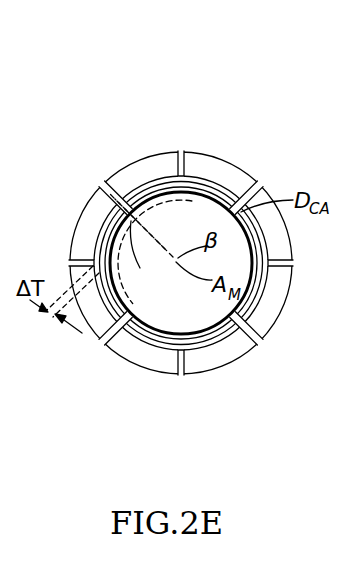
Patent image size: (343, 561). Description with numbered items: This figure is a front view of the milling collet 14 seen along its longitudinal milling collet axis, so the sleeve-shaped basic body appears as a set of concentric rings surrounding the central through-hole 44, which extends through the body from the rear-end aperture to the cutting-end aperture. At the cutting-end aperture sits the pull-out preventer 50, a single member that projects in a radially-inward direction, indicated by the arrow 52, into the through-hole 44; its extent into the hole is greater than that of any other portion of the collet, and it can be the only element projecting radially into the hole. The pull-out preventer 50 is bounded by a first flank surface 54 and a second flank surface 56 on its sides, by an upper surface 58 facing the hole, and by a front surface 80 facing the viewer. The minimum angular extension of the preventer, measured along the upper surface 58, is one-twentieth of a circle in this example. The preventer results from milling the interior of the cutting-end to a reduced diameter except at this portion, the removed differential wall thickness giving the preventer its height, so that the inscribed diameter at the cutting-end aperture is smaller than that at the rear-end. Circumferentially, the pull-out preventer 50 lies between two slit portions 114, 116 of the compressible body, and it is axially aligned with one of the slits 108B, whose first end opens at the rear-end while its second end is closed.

The milling collet 14 is at (263, 74).
The through-hole 44 is at (195, 307).
The pull-out preventer 50 is at (168, 186).
The arrow 52 is at (147, 222).
The first flank surface 54 is at (220, 186).
The second flank surface 56 is at (137, 202).
The upper surface 58 is at (140, 268).
The front surface 80 is at (168, 186).
The slit 108B is at (103, 186).
The slit portion 114 is at (190, 170).
The slit portion 116 is at (70, 258).